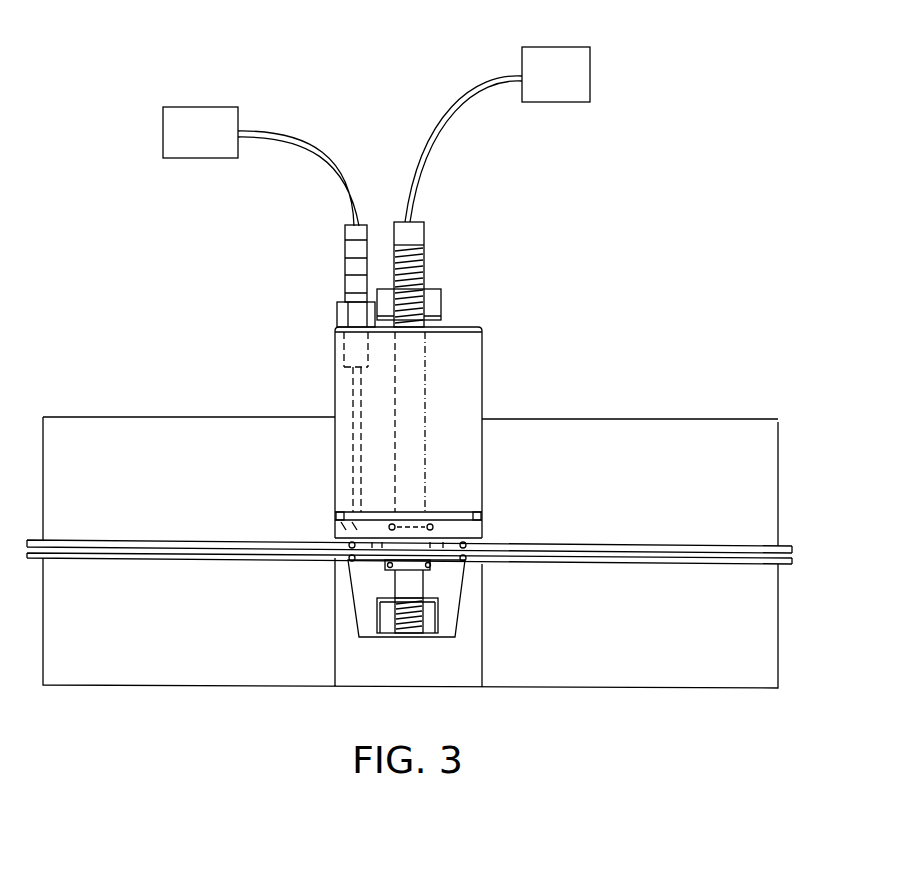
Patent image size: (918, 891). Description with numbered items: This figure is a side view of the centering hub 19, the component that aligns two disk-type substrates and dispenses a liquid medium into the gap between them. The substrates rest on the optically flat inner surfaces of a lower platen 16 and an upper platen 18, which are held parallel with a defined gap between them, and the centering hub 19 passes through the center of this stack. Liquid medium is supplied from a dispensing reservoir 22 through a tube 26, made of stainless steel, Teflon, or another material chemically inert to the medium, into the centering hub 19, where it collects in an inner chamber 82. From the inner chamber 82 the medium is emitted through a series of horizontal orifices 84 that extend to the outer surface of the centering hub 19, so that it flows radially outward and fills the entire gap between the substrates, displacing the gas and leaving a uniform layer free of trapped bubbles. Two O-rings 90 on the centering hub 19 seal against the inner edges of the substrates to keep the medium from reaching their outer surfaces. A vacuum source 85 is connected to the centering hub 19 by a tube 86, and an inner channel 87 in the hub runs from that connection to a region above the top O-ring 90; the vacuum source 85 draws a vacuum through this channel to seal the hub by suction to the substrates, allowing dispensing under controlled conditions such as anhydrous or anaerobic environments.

The lower platen 16 is at (668, 632).
The upper platen 18 is at (668, 486).
The centering hub 19 is at (483, 368).
The dispensing reservoir 22 is at (570, 89).
The tube 26 is at (448, 108).
The inner chamber 82 is at (413, 583).
The horizontal orifices 84 is at (377, 548).
The vacuum source 85 is at (215, 146).
The tube 86 is at (298, 140).
The inner channel 87 is at (355, 378).
The O-rings 90 is at (467, 545).